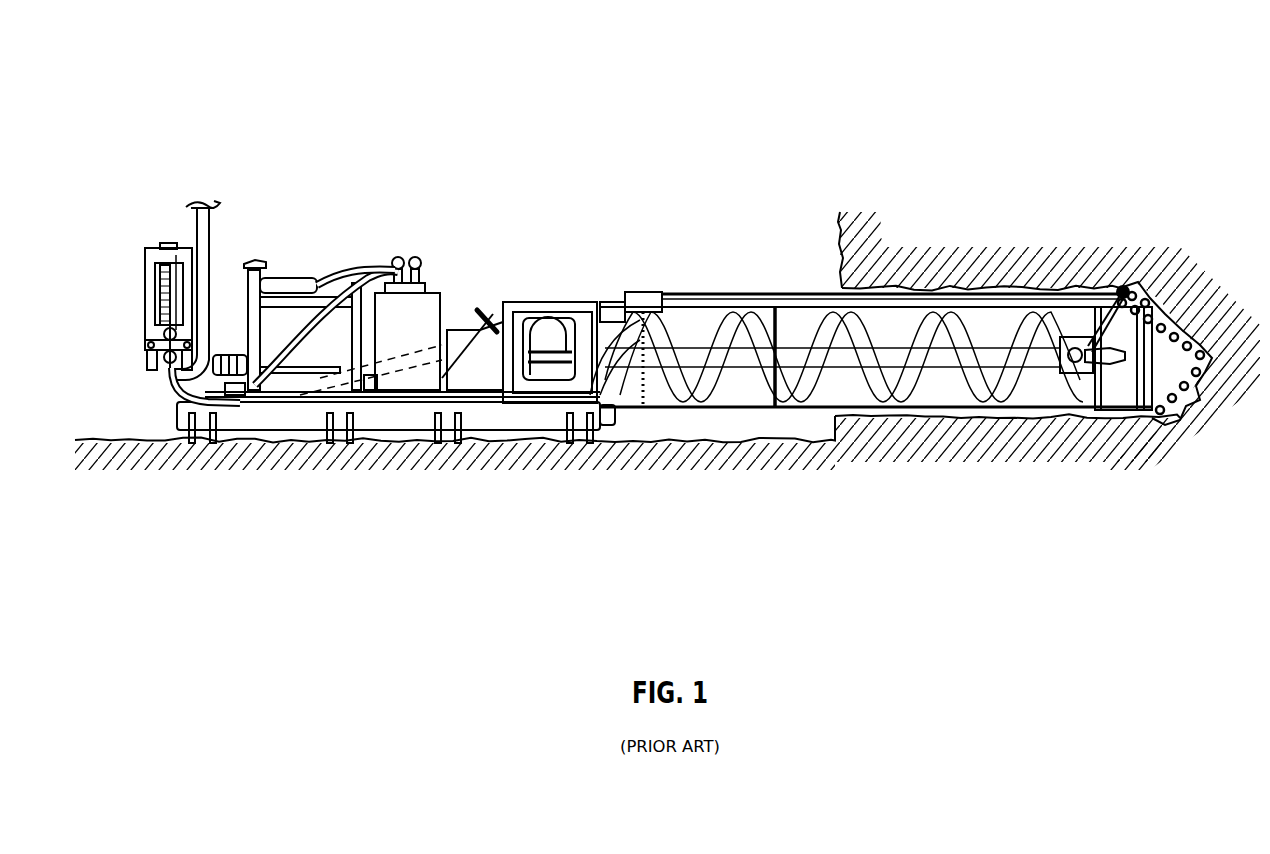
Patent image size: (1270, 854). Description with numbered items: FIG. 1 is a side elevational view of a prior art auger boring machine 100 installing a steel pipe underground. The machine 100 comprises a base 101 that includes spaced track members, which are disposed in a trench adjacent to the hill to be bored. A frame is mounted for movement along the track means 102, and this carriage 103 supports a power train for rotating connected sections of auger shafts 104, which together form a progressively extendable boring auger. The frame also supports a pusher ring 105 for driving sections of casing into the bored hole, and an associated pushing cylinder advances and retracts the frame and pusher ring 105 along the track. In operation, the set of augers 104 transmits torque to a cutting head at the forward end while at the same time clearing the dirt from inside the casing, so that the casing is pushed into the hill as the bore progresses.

The auger boring machine 100 is at (1005, 228).
The base 101 is at (190, 424).
The track means 102 is at (322, 433).
The carriage 103 is at (420, 394).
The auger shafts 104 is at (708, 303).
The pusher ring 105 is at (520, 307).